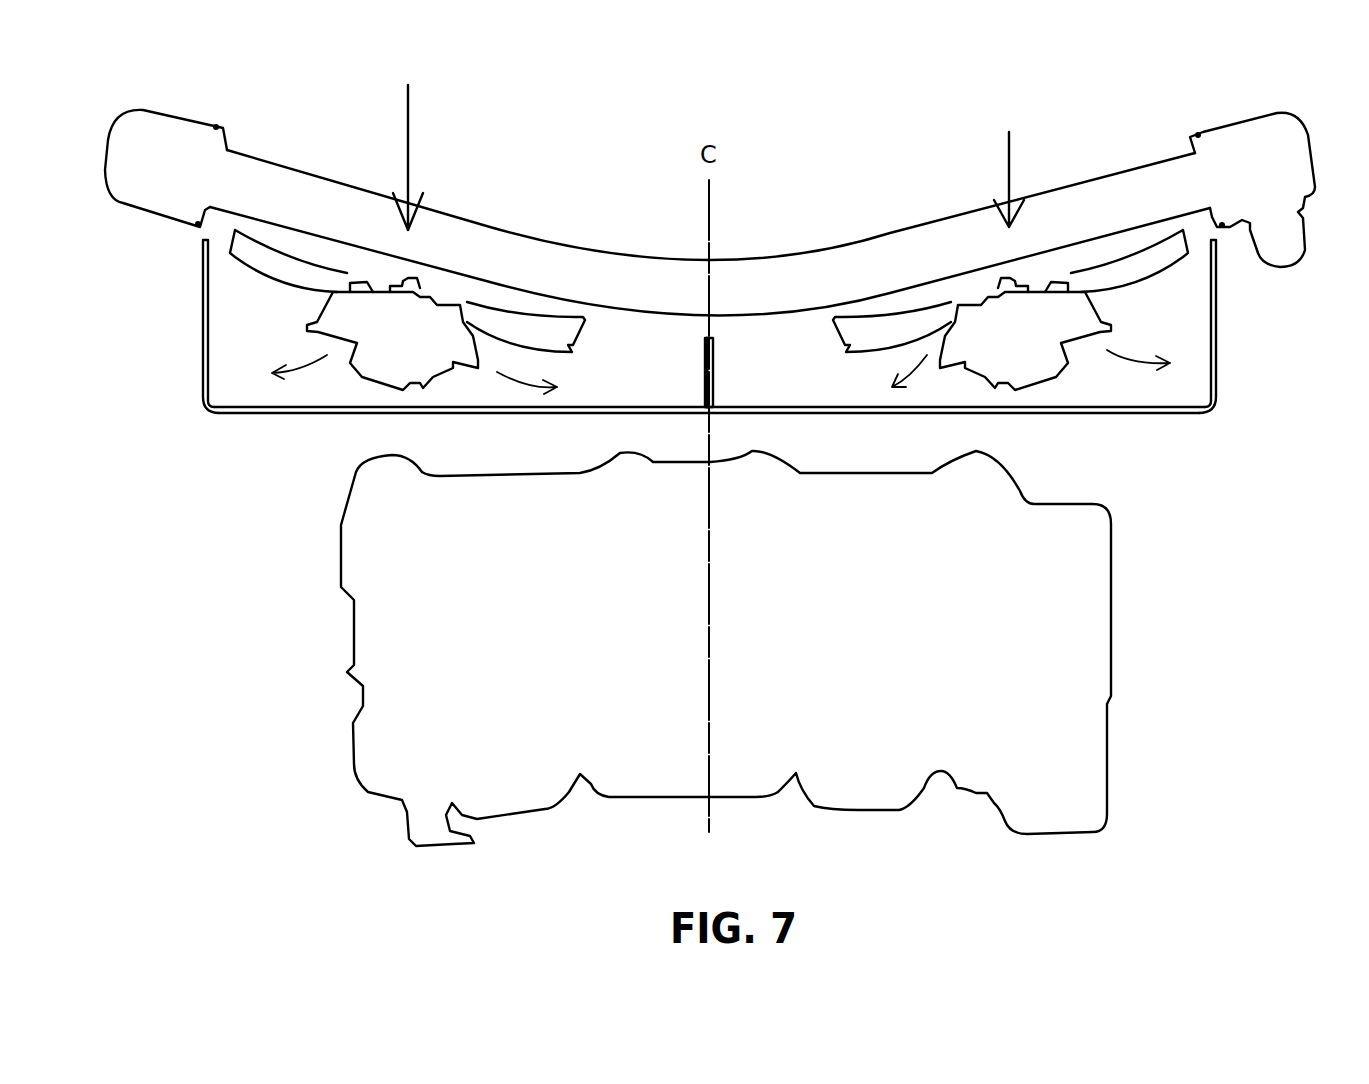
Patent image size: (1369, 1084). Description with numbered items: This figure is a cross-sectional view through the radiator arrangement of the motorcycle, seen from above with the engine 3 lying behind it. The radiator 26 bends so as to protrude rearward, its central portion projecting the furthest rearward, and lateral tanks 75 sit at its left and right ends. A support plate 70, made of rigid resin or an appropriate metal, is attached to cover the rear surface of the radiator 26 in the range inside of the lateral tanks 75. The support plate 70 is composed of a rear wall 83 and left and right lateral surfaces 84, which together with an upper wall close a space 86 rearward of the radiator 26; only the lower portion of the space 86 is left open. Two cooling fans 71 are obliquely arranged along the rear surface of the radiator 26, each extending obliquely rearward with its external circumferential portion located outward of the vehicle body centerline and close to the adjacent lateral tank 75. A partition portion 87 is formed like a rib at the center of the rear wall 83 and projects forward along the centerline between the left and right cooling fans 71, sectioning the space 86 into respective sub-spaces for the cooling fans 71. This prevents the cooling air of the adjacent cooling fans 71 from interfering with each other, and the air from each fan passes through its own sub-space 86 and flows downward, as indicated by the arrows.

The engine 3 is at (1060, 612).
The radiator 26 is at (617, 257).
The support plate 70 is at (710, 357).
The cooling fans 71 is at (438, 362).
The lateral tank 75 is at (168, 135).
The rear wall 83 is at (832, 413).
The lateral surfaces 84 is at (203, 320).
The space 86 is at (643, 370).
The partition portion 87 is at (715, 378).